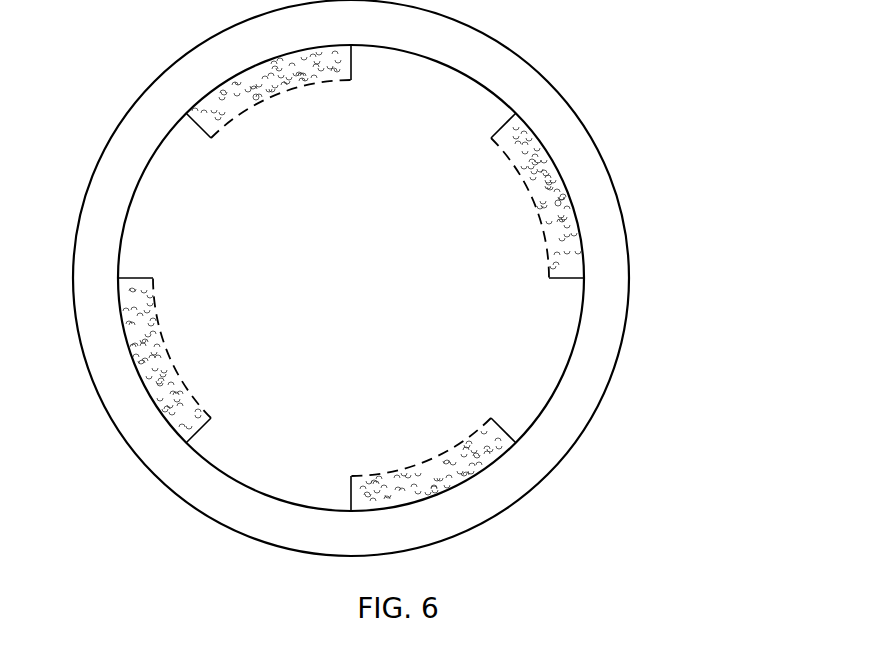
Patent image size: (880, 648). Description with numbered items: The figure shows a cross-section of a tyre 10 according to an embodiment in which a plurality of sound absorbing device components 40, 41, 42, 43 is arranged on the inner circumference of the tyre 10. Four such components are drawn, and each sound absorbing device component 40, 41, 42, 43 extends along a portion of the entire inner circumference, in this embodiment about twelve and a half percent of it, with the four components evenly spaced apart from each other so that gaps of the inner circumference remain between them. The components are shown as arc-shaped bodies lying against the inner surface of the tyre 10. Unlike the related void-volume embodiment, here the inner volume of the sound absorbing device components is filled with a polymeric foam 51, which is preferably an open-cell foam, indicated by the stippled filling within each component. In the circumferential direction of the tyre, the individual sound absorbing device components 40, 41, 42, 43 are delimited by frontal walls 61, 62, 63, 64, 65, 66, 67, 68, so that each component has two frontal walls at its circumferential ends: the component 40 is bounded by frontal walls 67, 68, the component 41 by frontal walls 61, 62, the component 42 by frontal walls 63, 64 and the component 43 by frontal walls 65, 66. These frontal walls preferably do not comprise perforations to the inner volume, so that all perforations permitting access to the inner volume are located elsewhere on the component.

The tyre 10 is at (583, 394).
The sound absorbing device component 40 is at (287, 148).
The sound absorbing device component 41 is at (485, 216).
The sound absorbing device component 42 is at (416, 414).
The sound absorbing device component 43 is at (218, 341).
The polymeric foam 51 is at (143, 312).
The frontal wall 61 is at (510, 118).
The frontal wall 62 is at (562, 283).
The frontal wall 63 is at (508, 437).
The frontal wall 64 is at (350, 497).
The frontal wall 65 is at (196, 437).
The frontal wall 66 is at (137, 277).
The frontal wall 67 is at (194, 133).
The frontal wall 68 is at (352, 62).